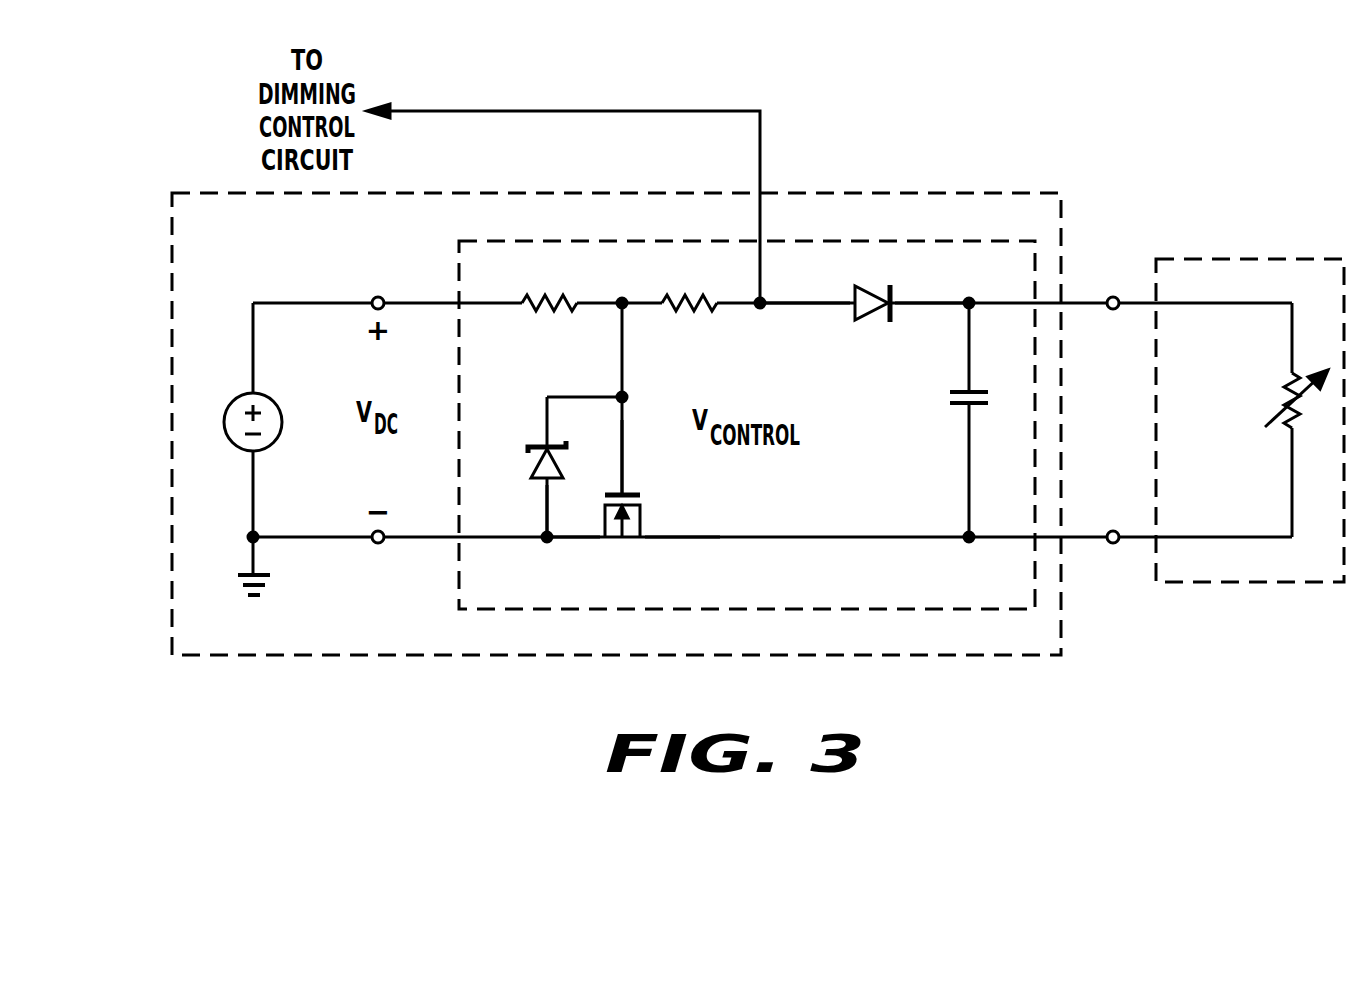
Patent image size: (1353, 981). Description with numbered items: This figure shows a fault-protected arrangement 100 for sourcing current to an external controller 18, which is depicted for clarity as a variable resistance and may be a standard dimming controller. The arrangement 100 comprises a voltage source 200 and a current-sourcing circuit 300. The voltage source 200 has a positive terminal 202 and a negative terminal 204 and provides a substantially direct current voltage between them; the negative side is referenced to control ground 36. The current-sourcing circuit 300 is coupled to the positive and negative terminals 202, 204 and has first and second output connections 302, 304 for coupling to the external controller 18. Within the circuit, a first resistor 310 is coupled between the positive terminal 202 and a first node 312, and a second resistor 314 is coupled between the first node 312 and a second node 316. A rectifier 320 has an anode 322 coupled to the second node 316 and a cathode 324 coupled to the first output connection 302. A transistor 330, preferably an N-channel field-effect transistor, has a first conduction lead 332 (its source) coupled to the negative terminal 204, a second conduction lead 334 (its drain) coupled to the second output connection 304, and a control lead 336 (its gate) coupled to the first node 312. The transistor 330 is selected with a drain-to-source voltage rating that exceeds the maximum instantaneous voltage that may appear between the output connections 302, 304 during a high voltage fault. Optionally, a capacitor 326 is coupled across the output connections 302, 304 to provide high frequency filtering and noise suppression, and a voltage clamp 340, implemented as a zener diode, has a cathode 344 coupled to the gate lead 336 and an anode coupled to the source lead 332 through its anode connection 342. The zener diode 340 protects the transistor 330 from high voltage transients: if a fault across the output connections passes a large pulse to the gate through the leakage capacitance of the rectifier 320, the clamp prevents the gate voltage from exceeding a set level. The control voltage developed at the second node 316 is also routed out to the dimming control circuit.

The external controller 18 is at (1243, 259).
The control ground 36 is at (253, 564).
The arrangement 100 is at (960, 193).
The voltage source 200 is at (246, 396).
The positive terminal 202 is at (373, 297).
The negative terminal 204 is at (378, 545).
The current-sourcing circuit 300 is at (880, 241).
The first output connection 302 is at (1111, 297).
The second output connection 304 is at (1113, 545).
The first resistor 310 is at (547, 297).
The first node 312 is at (618, 298).
The second resistor 314 is at (684, 297).
The second node 316 is at (760, 310).
The rectifier 320 is at (866, 320).
The anode 322 is at (808, 300).
The cathode 324 is at (921, 300).
The capacitor 326 is at (957, 405).
The transistor 330 is at (626, 545).
The first conduction lead 332 is at (567, 545).
The second conduction lead 334 is at (681, 545).
The control lead 336 is at (624, 462).
The voltage clamp 340 is at (531, 446).
The zener anode connection 342 is at (545, 508).
The cathode 344 is at (545, 404).